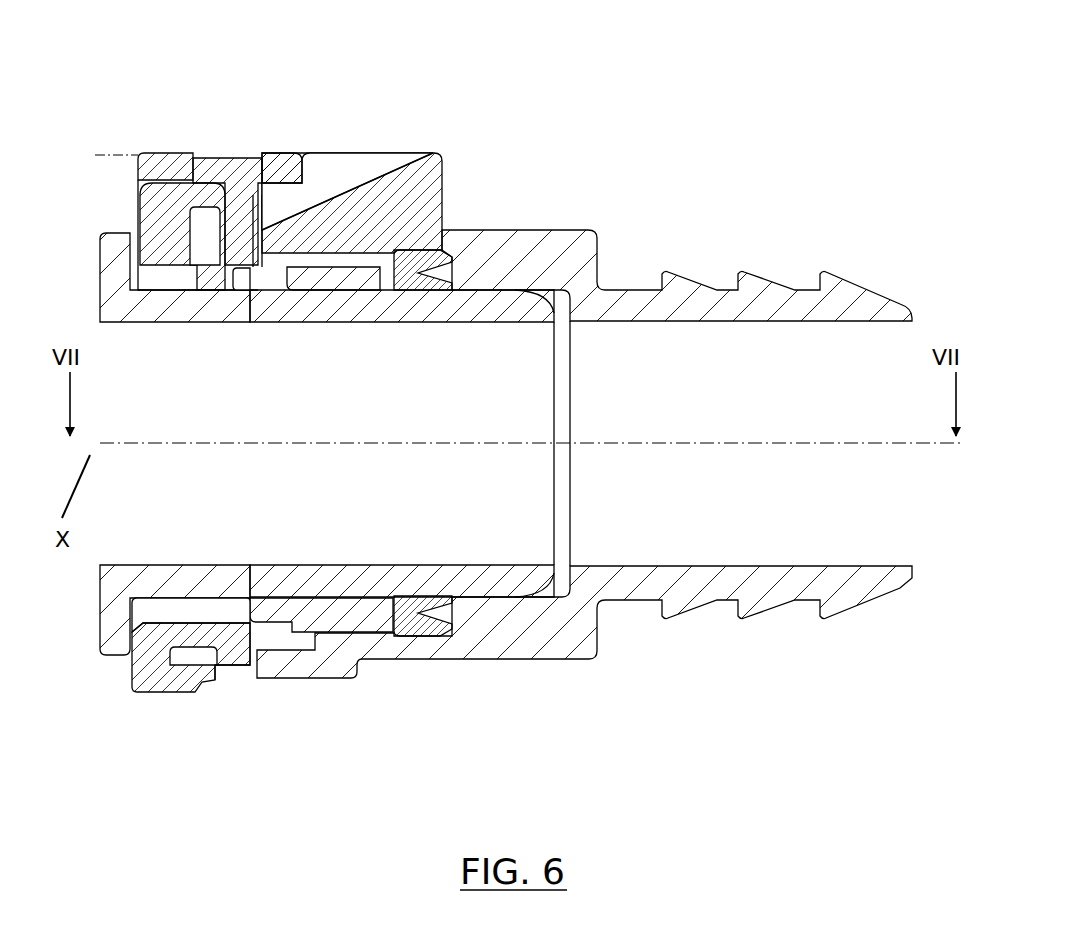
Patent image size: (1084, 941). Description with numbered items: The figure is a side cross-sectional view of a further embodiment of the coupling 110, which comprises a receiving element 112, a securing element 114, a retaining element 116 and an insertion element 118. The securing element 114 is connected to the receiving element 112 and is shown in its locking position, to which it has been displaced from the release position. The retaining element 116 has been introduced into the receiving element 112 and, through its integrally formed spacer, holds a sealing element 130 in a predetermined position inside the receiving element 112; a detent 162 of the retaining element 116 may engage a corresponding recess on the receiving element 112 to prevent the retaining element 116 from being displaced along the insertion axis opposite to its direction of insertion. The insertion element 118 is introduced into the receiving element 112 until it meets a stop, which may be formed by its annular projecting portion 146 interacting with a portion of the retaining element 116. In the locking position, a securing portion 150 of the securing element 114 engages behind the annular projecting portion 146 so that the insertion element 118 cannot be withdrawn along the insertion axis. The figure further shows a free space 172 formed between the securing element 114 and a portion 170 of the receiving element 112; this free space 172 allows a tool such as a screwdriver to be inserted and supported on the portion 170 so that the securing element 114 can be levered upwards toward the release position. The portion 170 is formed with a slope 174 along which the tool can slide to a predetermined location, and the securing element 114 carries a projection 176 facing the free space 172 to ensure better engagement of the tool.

The coupling 110 is at (627, 105).
The receiving element 112 is at (765, 302).
The securing element 114 is at (215, 168).
The retaining element 116 is at (158, 650).
The insertion element 118 is at (112, 652).
The sealing element 130 is at (433, 257).
The annular projecting portion 146 is at (267, 607).
The securing portion 150 is at (205, 277).
The detent 162 is at (228, 658).
The portion of the receiving element 170 is at (371, 141).
The free space 172 is at (318, 173).
The slope 174 is at (387, 160).
The projection 176 is at (281, 163).